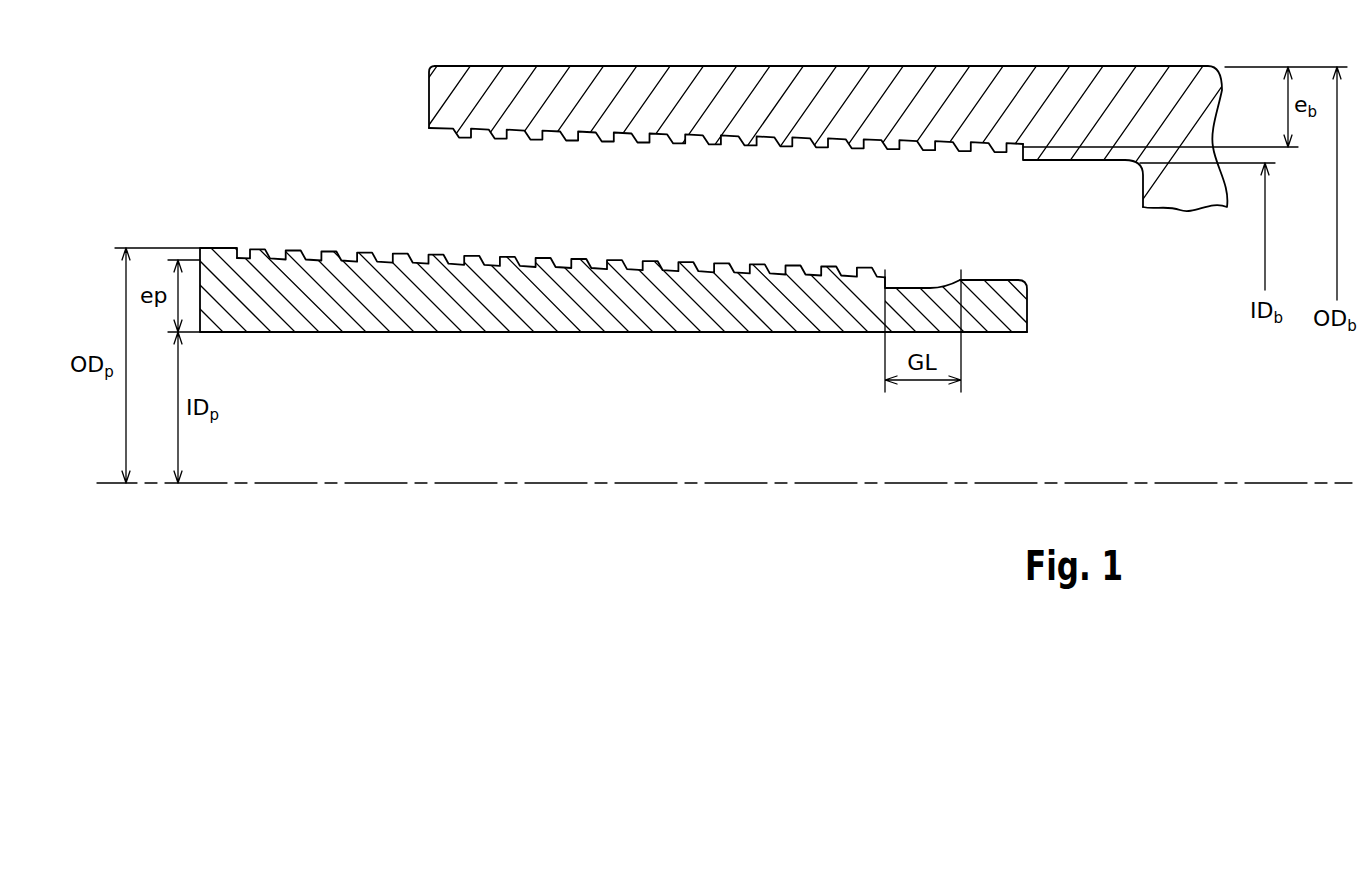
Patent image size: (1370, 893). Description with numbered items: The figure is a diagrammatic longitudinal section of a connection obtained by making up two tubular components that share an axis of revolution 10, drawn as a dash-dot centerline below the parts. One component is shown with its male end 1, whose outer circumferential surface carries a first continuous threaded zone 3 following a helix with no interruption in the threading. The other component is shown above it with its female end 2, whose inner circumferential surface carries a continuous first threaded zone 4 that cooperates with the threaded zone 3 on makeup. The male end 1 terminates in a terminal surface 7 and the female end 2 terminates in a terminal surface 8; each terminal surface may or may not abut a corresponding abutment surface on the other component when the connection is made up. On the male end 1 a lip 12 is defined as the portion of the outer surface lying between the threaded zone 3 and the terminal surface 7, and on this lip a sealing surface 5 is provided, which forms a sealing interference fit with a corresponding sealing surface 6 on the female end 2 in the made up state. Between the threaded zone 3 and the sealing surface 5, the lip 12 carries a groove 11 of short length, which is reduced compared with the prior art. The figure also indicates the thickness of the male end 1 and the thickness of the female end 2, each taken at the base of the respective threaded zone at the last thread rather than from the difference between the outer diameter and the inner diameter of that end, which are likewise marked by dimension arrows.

The male end 1 is at (480, 316).
The female end 2 is at (518, 84).
The first continuous threaded zone 3 is at (330, 258).
The continuous first threaded zone 4 is at (605, 135).
The sealing surface 5 is at (990, 280).
The sealing surface 6 is at (1080, 163).
The terminal surface 7 is at (1027, 312).
The terminal surface 8 is at (429, 99).
The axis of revolution 10 is at (548, 485).
The groove 11 is at (908, 285).
The lip 12 is at (990, 305).